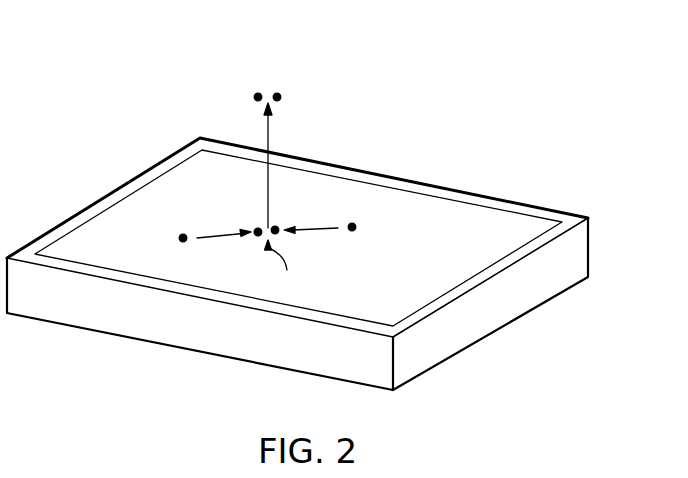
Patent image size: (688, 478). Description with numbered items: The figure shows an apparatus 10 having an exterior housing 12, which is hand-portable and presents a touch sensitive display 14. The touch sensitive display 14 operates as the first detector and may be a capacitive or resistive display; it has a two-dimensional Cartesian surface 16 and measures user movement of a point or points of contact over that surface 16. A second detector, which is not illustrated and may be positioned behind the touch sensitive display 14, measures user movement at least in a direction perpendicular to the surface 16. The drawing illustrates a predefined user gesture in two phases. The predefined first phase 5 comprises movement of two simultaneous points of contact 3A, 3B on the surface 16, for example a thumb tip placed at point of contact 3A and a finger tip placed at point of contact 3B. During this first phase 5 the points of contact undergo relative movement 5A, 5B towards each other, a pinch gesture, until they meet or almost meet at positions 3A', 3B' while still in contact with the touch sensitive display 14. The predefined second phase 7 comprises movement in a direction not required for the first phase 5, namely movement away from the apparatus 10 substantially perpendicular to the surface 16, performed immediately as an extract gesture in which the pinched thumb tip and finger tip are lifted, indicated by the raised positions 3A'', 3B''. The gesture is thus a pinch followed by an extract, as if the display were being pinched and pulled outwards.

The apparatus 10 is at (590, 216).
The exterior housing 12 is at (417, 358).
The touch sensitive display 14 is at (428, 213).
The two-dimensional surface 16 is at (85, 238).
The point of contact 3A is at (161, 218).
The point of contact 3B is at (374, 253).
The point of contact 3A' is at (223, 209).
The point of contact 3B' is at (299, 207).
The first raised point 3A'' is at (233, 65).
The second raised point 3B'' is at (304, 65).
The first phase 5 is at (281, 272).
The relative movement 5A is at (218, 238).
The relative movement 5B is at (307, 232).
The second phase 7 is at (270, 143).